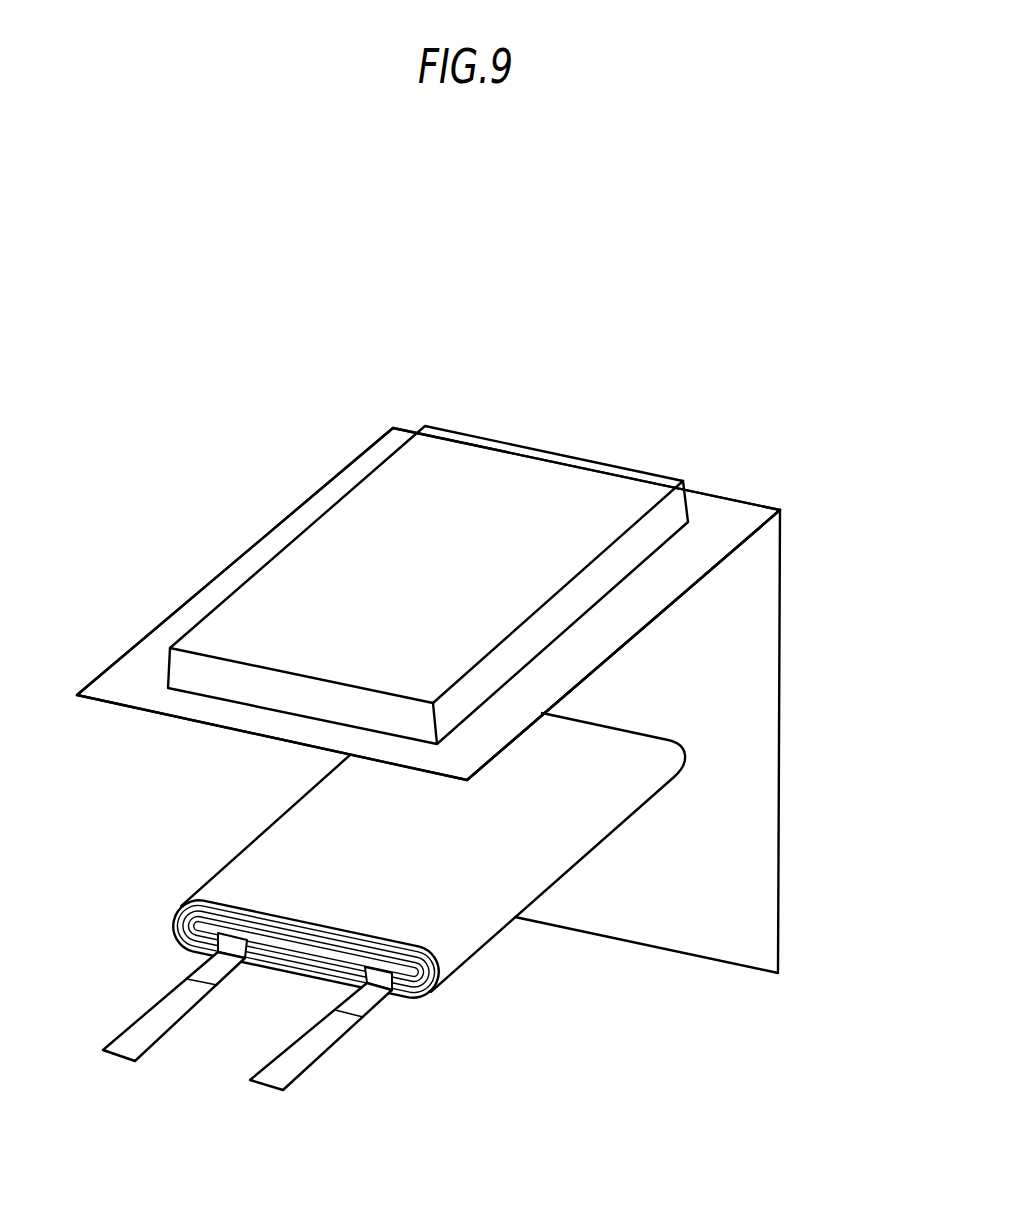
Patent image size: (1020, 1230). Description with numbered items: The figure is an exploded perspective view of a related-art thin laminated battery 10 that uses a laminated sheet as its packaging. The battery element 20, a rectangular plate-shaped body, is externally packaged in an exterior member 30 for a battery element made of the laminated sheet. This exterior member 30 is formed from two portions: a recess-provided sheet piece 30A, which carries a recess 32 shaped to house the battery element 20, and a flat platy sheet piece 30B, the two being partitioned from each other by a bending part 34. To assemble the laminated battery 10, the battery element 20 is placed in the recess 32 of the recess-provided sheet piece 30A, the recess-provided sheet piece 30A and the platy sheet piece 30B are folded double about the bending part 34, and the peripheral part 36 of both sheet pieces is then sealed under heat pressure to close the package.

The laminated battery 10 is at (403, 280).
The battery element 20 is at (450, 908).
The exterior member for a battery element 30 is at (779, 833).
The recess-provided sheet piece 30A is at (713, 512).
The platy sheet piece 30B is at (750, 702).
The recess 32 is at (380, 490).
The bending part 34 is at (780, 513).
The peripheral part 36 is at (213, 573).